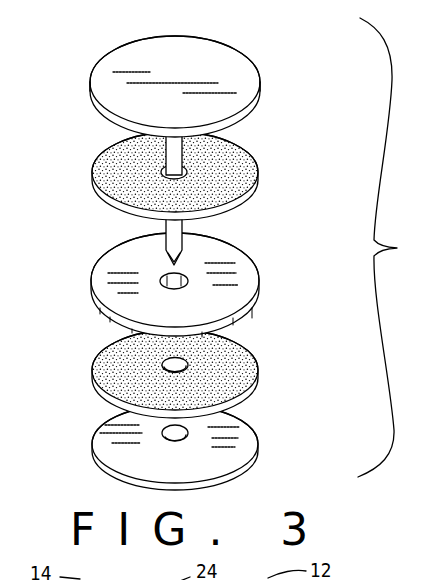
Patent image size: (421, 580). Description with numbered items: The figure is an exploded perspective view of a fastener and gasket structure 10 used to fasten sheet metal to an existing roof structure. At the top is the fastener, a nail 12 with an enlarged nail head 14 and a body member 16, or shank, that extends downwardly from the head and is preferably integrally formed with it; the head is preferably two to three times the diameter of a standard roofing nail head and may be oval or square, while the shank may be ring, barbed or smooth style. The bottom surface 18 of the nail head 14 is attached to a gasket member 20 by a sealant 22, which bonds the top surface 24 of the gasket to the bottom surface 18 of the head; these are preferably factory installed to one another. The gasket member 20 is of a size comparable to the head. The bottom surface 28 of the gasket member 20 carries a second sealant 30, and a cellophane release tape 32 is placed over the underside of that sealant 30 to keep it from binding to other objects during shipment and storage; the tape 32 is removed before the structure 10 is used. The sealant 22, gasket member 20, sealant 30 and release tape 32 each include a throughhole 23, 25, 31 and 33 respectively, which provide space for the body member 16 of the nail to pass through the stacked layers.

The fastener and gasket structure 10 is at (312, 183).
The nail 12 is at (272, 61).
The nail head 14 is at (125, 73).
The body member 16 is at (175, 235).
The bottom surface of the fastener head 18 is at (257, 108).
The gasket member 20 is at (238, 283).
The sealant 22 is at (123, 163).
The throughhole 23 is at (150, 180).
The top surface of the gasket 24 is at (125, 282).
The throughhole 25 is at (167, 289).
The bottom surface of the gasket member 28 is at (253, 314).
The sealant 30 is at (258, 357).
The throughhole 31 is at (165, 371).
The release tape 32 is at (240, 428).
The throughhole 33 is at (166, 437).